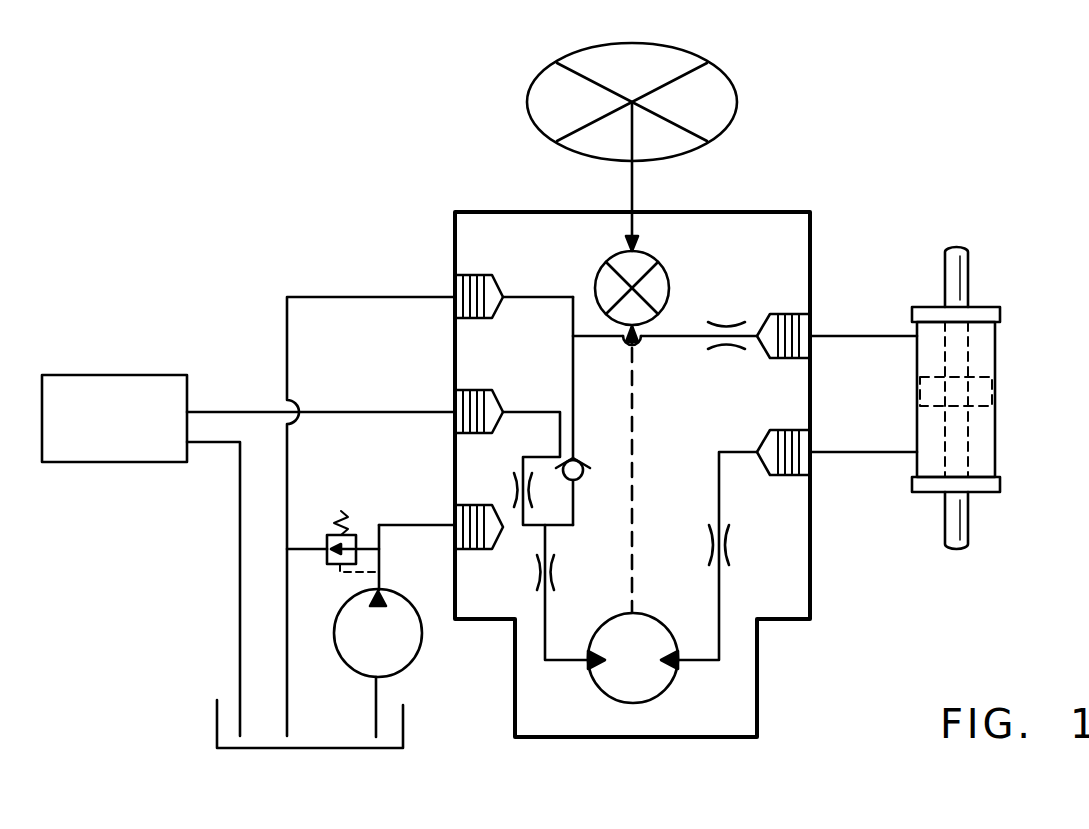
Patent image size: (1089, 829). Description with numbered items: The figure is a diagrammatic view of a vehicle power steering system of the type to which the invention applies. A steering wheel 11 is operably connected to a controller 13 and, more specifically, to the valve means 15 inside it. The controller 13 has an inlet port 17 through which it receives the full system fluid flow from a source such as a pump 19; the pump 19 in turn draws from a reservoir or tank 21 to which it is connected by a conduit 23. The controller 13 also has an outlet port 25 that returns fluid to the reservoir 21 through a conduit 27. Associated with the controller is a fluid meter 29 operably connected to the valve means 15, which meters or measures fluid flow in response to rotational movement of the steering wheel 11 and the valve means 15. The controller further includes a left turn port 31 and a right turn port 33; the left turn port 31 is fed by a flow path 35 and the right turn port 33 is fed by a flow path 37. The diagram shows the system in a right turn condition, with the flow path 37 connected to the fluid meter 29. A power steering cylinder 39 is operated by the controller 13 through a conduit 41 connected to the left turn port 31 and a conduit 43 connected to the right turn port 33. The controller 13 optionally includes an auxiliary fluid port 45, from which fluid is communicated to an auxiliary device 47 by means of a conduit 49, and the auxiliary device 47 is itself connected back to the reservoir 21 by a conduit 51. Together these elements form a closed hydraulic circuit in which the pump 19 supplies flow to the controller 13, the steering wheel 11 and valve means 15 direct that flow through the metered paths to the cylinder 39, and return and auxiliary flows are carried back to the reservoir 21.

The steering wheel 11 is at (737, 107).
The controller 13 is at (836, 189).
The valve means 15 is at (686, 282).
The inlet port 17 is at (455, 515).
The pump 19 is at (420, 652).
The reservoir 21 is at (405, 740).
The conduit 23 is at (375, 692).
The outlet port 25 is at (455, 283).
The conduit 27 is at (287, 380).
The fluid meter 29 is at (668, 673).
The left turn port 31 is at (811, 320).
The right turn port 33 is at (812, 463).
The flow path 35 is at (708, 338).
The flow path 37 is at (719, 465).
The power steering cylinder 39 is at (996, 357).
The conduit 41 is at (889, 337).
The conduit 43 is at (855, 452).
The auxiliary fluid port 45 is at (455, 400).
The auxiliary device 47 is at (160, 462).
The conduit 49 is at (355, 412).
The conduit 51 is at (240, 560).